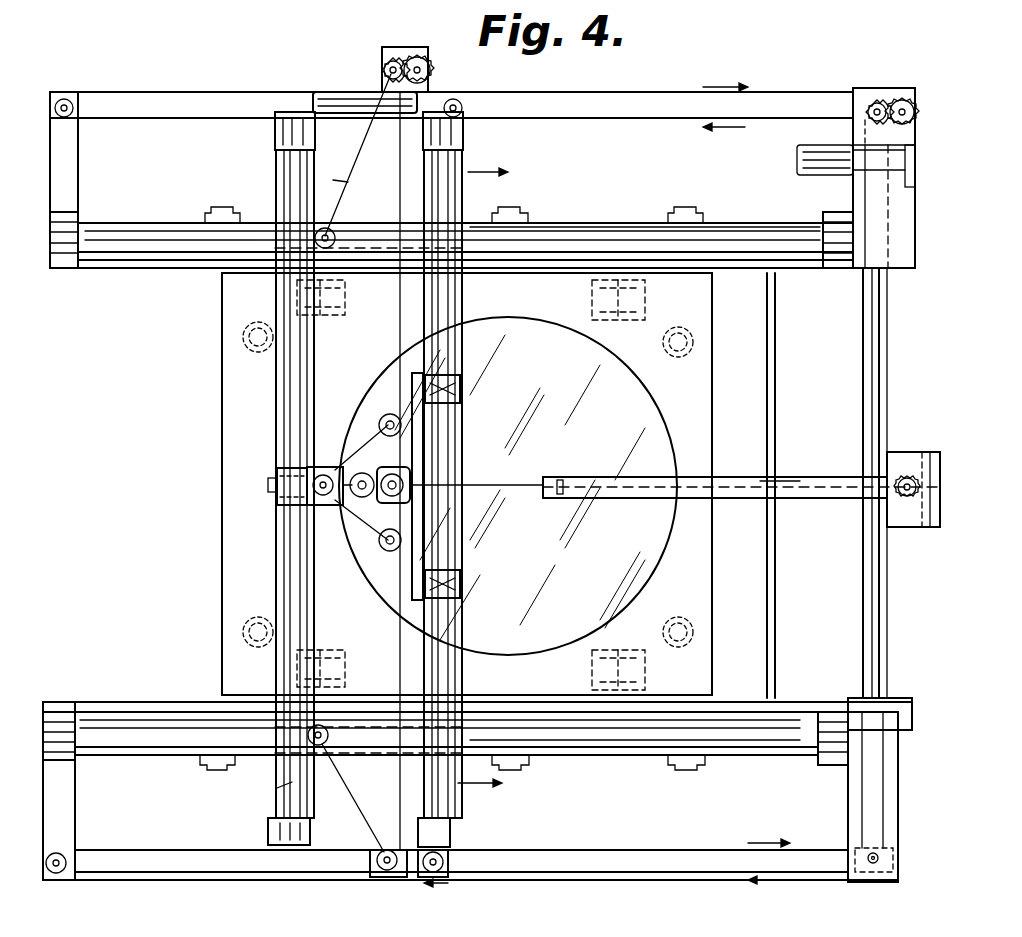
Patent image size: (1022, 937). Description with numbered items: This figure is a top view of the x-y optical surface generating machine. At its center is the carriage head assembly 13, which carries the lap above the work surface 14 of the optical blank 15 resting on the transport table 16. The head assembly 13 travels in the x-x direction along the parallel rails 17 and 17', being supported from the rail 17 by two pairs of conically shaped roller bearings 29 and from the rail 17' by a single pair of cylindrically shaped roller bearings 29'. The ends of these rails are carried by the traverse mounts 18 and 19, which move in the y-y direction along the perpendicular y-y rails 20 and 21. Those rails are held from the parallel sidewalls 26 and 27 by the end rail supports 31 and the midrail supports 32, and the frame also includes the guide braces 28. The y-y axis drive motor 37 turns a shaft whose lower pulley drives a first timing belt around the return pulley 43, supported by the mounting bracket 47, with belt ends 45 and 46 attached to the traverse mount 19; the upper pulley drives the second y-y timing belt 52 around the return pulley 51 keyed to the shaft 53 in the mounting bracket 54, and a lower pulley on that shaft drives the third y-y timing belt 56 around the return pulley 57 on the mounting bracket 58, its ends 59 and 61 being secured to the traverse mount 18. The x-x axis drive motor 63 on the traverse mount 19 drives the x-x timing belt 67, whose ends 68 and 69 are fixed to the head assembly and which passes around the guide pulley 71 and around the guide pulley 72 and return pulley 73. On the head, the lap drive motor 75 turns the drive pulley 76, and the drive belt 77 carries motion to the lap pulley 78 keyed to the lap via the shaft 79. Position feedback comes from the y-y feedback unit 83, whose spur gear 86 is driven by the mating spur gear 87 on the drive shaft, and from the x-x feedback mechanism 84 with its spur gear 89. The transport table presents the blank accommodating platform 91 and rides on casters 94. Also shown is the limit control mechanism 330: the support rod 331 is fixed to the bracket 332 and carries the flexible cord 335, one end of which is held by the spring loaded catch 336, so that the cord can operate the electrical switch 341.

The carriage head assembly 13 is at (375, 441).
The work surface 14 is at (610, 432).
The optical blank 15 is at (668, 444).
The transport table 16 is at (222, 575).
The guide rail 17 is at (455, 465).
The guide rail 17' is at (353, 798).
The traverse mount 18 is at (279, 788).
The traverse mount 19 is at (386, 160).
The y-y rail 20 is at (750, 226).
The y-y rail 21 is at (755, 757).
The sidewall 26 is at (168, 265).
The sidewall 27 is at (160, 702).
The guide brace 28 is at (777, 586).
The conically shaped roller bearings 29 is at (468, 485).
The cylindrically shaped roller bearings 29' is at (264, 500).
The end rail support 31 is at (66, 262).
The midrail support 32 is at (215, 207).
The y-y axis drive motor 37 is at (828, 163).
The return pulley 43 is at (65, 99).
The end of y-y timing belt 45 is at (283, 112).
The end of y-y timing belt 46 is at (487, 122).
The mounting bracket 47 is at (72, 160).
The return pulley 51 is at (885, 850).
The second y-y timing belt 52 is at (887, 763).
The shaft 53 is at (898, 866).
The mounting bracket 54 is at (893, 798).
The third y-y timing belt 56 is at (682, 850).
The return pulley 57 is at (62, 855).
The mounting bracket 58 is at (62, 797).
The end of third y-y timing belt 59 is at (285, 863).
The end of third y-y timing belt 61 is at (446, 858).
The x-x axis drive motor 63 is at (330, 92).
The x-x timing belt 67 is at (340, 183).
The end of x-x timing belt 68 is at (389, 414).
The end of x-x timing belt 69 is at (384, 548).
The guide pulley 71 is at (330, 233).
The guide pulley 72 is at (330, 736).
The return pulley 73 is at (385, 849).
The lap drive motor 75 is at (388, 468).
The drive pulley 76 is at (378, 500).
The drive belt 77 is at (372, 498).
The lap pulley 78 is at (405, 470).
The shaft 79 is at (405, 490).
The y-y position feedback unit 83 is at (925, 112).
The x-x position feedback mechanism 84 is at (382, 62).
The spur gear 86 is at (905, 98).
The mating spur gear 87 is at (877, 100).
The mating spur gear 89 is at (422, 72).
The blank accommodating platform 91 is at (393, 60).
The casters 94 is at (345, 310).
The limit control mechanism 330 is at (640, 477).
The support rod 331 is at (735, 477).
The bracket 332 is at (940, 470).
The flexible cord 335 is at (522, 477).
The spring loaded catch 336 is at (910, 498).
The electrical switch 341 is at (923, 452).